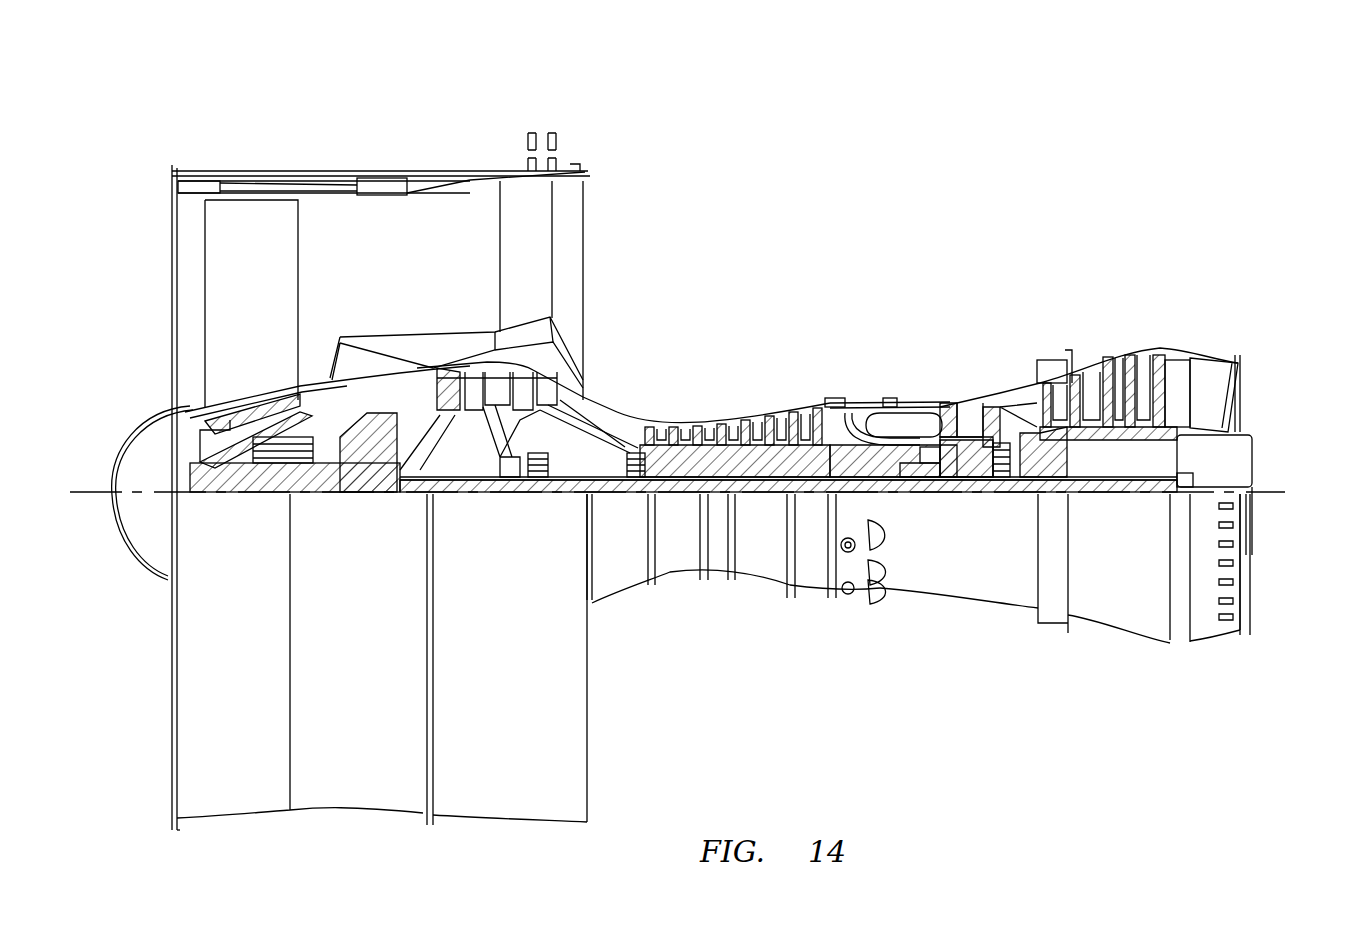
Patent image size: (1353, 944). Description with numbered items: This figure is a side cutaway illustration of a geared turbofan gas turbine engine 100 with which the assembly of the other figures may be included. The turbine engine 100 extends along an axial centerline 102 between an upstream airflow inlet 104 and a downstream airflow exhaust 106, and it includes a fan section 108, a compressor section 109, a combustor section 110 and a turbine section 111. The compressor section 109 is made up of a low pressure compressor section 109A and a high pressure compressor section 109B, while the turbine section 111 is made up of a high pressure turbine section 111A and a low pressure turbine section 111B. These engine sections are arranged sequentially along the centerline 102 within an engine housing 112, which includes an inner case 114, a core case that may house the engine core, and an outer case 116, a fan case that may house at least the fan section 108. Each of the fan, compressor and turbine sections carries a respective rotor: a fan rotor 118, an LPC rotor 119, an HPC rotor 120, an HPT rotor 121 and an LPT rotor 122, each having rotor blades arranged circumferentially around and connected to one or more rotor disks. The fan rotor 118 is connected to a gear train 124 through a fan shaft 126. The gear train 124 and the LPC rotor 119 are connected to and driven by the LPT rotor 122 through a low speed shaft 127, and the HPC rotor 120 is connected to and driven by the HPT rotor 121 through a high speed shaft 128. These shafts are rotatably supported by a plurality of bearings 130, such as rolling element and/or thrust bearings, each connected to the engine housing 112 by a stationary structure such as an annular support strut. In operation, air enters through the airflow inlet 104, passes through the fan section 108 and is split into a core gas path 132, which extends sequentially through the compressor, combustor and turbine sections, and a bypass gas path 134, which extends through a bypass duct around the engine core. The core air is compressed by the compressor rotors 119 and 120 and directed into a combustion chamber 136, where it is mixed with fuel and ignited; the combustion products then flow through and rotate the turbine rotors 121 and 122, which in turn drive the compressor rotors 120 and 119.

The gas turbine engine 100 is at (140, 150).
The axial centerline 102 is at (82, 486).
The airflow inlet 104 is at (172, 242).
The airflow exhaust 106 is at (1247, 385).
The fan section 108 is at (342, 138).
The compressor section 109 is at (812, 80).
The low pressure compressor section 109A is at (590, 130).
The high pressure compressor section 109B is at (810, 326).
The combustor section 110 is at (932, 326).
The turbine section 111 is at (1200, 253).
The high pressure turbine section 111A is at (1016, 326).
The low pressure turbine section 111B is at (1203, 326).
The engine housing 112 is at (615, 612).
The inner case 114 is at (1155, 650).
The outer case 116 is at (535, 825).
The fan rotor 118 is at (215, 408).
The LPC rotor 119 is at (490, 458).
The HPC rotor 120 is at (764, 478).
The HPT rotor 121 is at (972, 494).
The LPT rotor 122 is at (1112, 440).
The gear train 124 is at (382, 494).
The fan shaft 126 is at (250, 490).
The low speed shaft 127 is at (1130, 496).
The high speed shaft 128 is at (900, 494).
The bearings 130 is at (262, 494).
The core gas path 132 is at (608, 413).
The bypass gas path 134 is at (440, 263).
The combustion chamber 136 is at (892, 428).